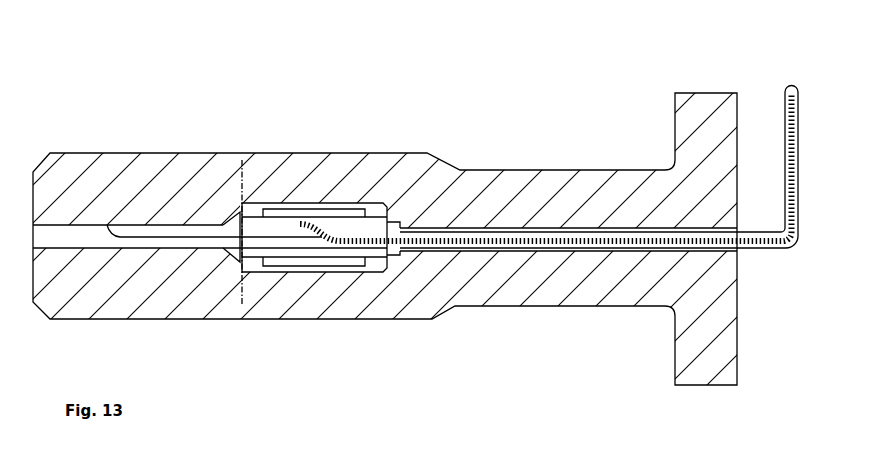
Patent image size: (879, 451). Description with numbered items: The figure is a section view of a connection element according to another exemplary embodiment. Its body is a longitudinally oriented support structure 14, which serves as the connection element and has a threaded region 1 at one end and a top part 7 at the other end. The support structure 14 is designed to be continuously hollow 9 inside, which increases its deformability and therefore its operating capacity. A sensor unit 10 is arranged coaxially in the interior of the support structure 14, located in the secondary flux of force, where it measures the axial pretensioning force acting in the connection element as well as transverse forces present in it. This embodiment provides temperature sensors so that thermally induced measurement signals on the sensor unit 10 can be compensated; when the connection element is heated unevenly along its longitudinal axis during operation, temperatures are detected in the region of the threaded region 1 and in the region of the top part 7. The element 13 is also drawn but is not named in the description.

The threaded region 1 is at (192, 153).
The top part 7 is at (695, 118).
The hollow 9 is at (52, 240).
The sensor unit 10 is at (245, 268).
The capillary tube 13 is at (593, 230).
The support structure 14 is at (563, 290).